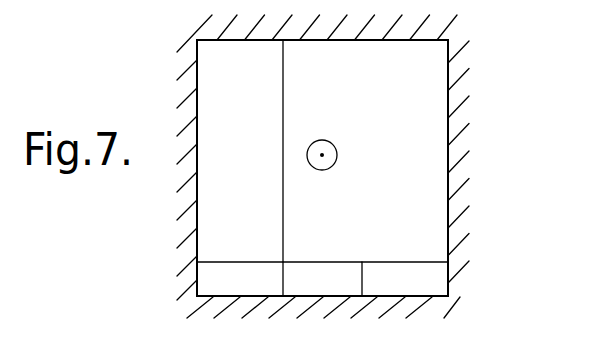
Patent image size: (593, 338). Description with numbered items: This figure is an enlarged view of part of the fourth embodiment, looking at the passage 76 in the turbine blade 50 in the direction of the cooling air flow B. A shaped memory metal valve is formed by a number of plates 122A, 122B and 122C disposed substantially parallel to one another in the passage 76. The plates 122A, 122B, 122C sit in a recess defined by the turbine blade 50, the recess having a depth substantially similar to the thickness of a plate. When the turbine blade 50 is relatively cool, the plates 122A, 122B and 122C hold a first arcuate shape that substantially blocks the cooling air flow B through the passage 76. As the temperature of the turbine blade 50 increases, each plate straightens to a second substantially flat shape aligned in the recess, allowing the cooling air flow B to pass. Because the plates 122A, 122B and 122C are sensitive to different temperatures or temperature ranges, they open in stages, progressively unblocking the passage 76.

The turbine blade 50 is at (460, 62).
The passage 76 is at (418, 137).
The cooling air flow B is at (327, 169).
The plate 122A is at (213, 228).
The plate 122B is at (327, 271).
The plate 122C is at (428, 279).